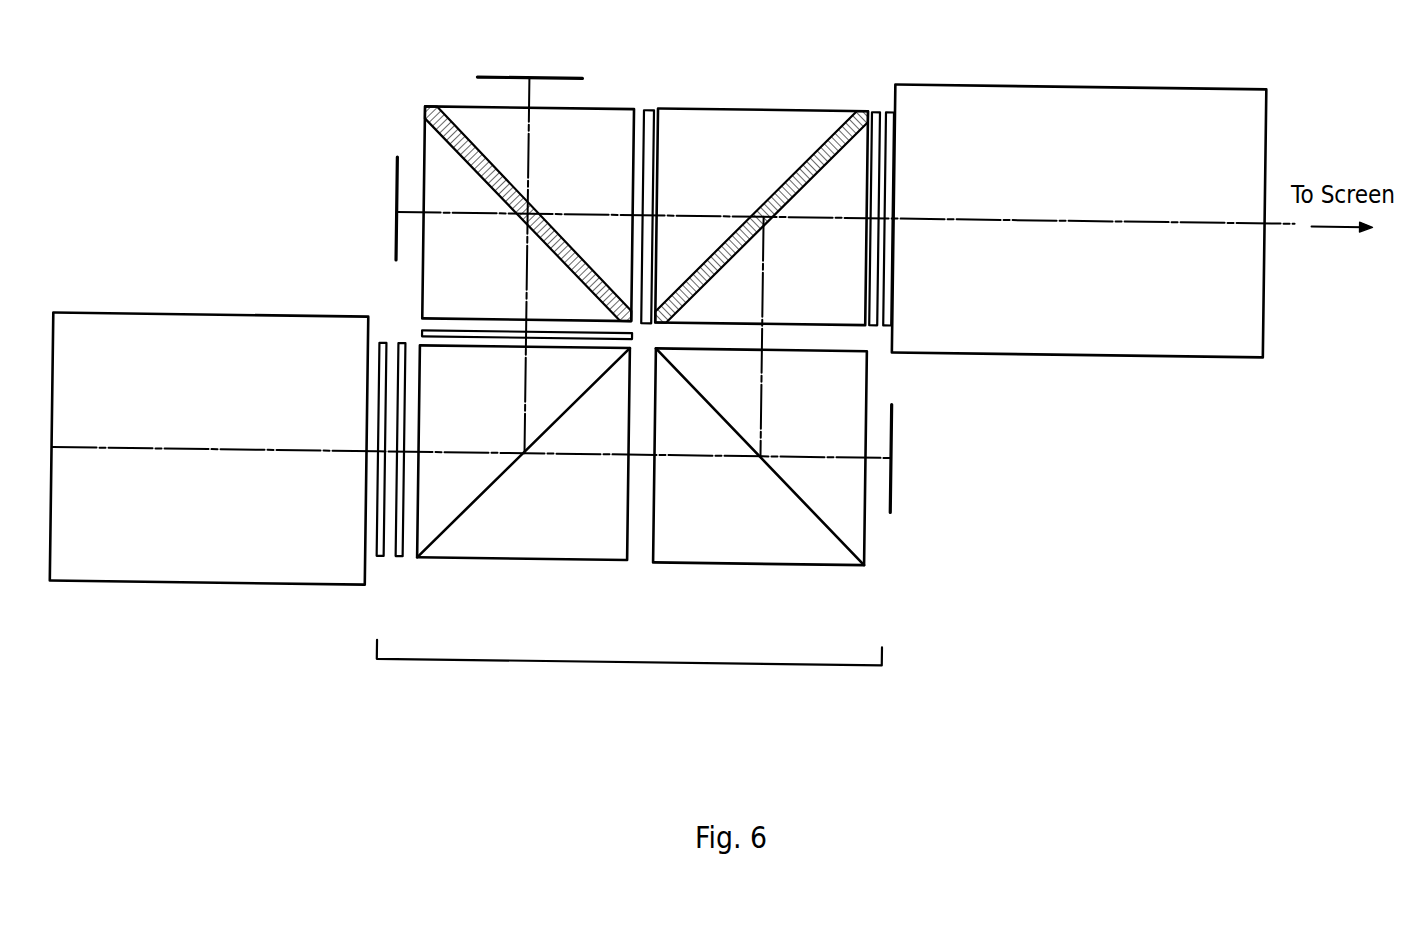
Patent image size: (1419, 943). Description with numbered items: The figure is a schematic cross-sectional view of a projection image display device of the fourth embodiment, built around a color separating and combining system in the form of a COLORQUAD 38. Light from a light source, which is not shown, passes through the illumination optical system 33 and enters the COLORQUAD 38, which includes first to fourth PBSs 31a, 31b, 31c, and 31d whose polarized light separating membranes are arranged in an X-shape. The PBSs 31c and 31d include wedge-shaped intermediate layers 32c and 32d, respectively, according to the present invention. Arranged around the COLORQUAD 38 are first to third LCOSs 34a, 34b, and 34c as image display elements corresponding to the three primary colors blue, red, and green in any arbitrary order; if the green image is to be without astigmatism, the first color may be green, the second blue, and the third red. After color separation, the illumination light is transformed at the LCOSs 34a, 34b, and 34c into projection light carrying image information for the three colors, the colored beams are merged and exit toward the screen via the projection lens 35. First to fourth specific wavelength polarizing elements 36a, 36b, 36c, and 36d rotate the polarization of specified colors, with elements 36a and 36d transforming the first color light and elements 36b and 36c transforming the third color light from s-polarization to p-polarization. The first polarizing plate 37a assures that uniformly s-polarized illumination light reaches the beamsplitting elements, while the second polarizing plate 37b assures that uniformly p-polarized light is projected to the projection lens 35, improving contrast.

The first PBS 31a is at (531, 554).
The second PBS 31b is at (755, 547).
The third PBS 31c is at (439, 150).
The fourth PBS 31d is at (724, 121).
The wedge-shaped intermediate layer 32c is at (444, 106).
The wedge-shaped intermediate layer 32d is at (830, 141).
The illumination optical system 33 is at (238, 576).
The first LCOS 34a is at (893, 418).
The second LCOS 34b is at (395, 231).
The third LCOS 34c is at (508, 79).
The projection lens 35 is at (1133, 342).
The first specific wavelength polarizing element 36a is at (403, 560).
The second specific wavelength polarizing element 36b is at (426, 336).
The third specific wavelength polarizing element 36c is at (645, 110).
The fourth specific wavelength polarizing element 36d is at (866, 113).
The first polarizing plate 37a is at (383, 560).
The second polarizing plate 37b is at (884, 112).
The COLORQUAD 38 is at (629, 671).